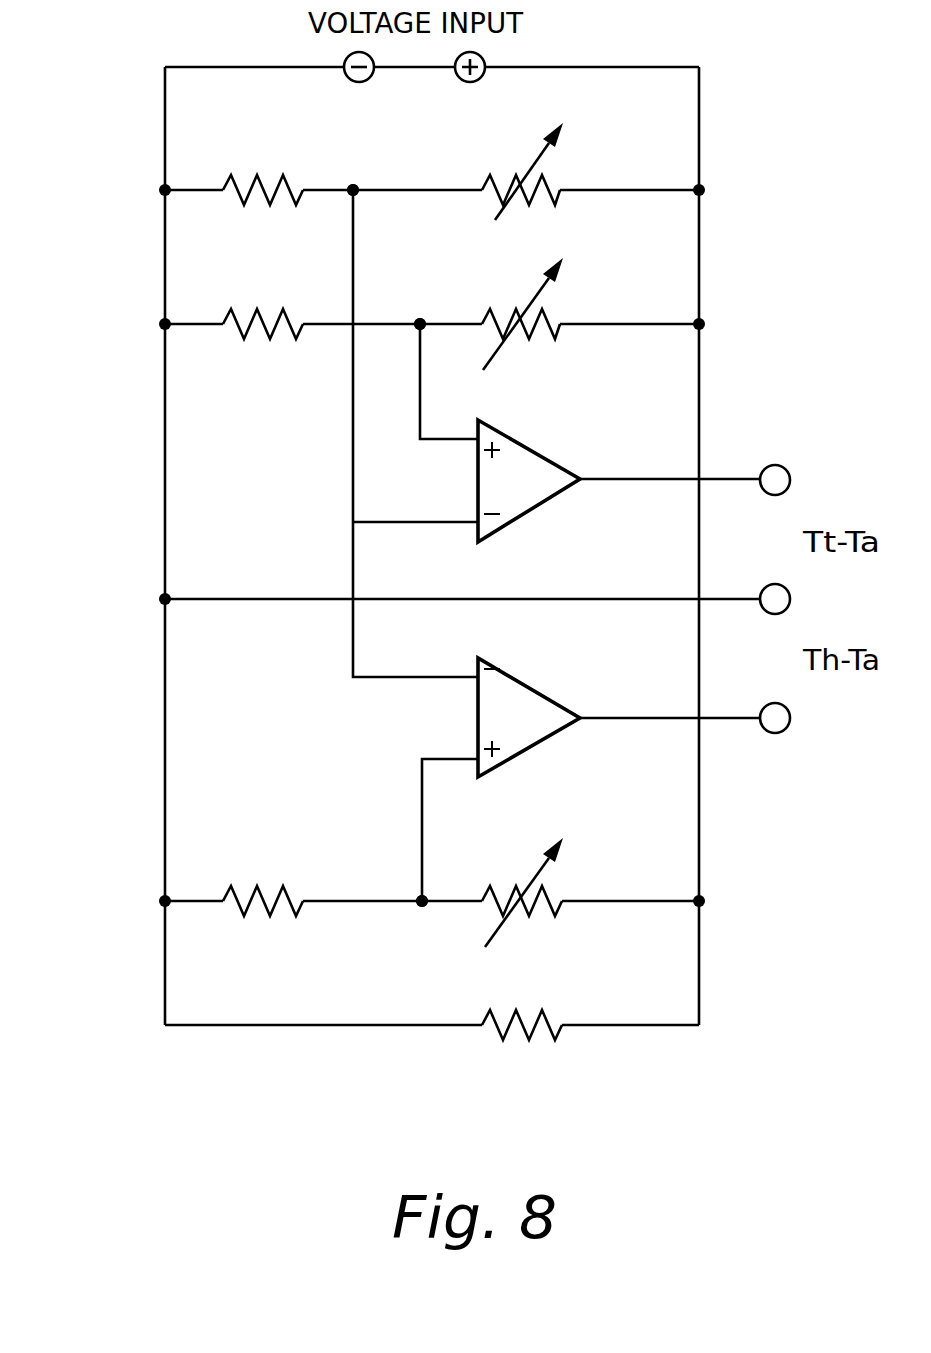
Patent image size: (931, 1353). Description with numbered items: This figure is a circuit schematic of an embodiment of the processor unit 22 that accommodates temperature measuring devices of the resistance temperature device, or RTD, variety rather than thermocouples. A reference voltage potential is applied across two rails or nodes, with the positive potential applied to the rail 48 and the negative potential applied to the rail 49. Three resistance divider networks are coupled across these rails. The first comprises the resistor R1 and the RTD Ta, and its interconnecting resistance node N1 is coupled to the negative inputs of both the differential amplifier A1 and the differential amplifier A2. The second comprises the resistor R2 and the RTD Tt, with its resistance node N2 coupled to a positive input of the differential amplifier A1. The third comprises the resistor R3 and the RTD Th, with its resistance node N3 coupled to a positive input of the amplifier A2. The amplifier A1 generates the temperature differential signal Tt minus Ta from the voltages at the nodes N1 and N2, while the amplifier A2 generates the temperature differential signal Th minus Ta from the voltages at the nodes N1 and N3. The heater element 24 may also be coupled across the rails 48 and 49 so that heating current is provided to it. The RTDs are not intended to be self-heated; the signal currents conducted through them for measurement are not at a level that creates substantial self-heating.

The rail 49 is at (165, 407).
The rail 48 is at (699, 398).
The processor unit 22 is at (393, 550).
The heater element 24 is at (538, 1015).
The resistance node N1 is at (353, 186).
The resistance node N2 is at (420, 320).
The resistance node N3 is at (422, 906).
The differential amplifier A1 is at (530, 512).
The differential amplifier A2 is at (530, 750).
The resistor R1 is at (263, 171).
The resistor R2 is at (263, 304).
The resistor R3 is at (263, 880).
The RTD Ta is at (520, 171).
The RTD Tt is at (522, 314).
The RTD Th is at (522, 892).